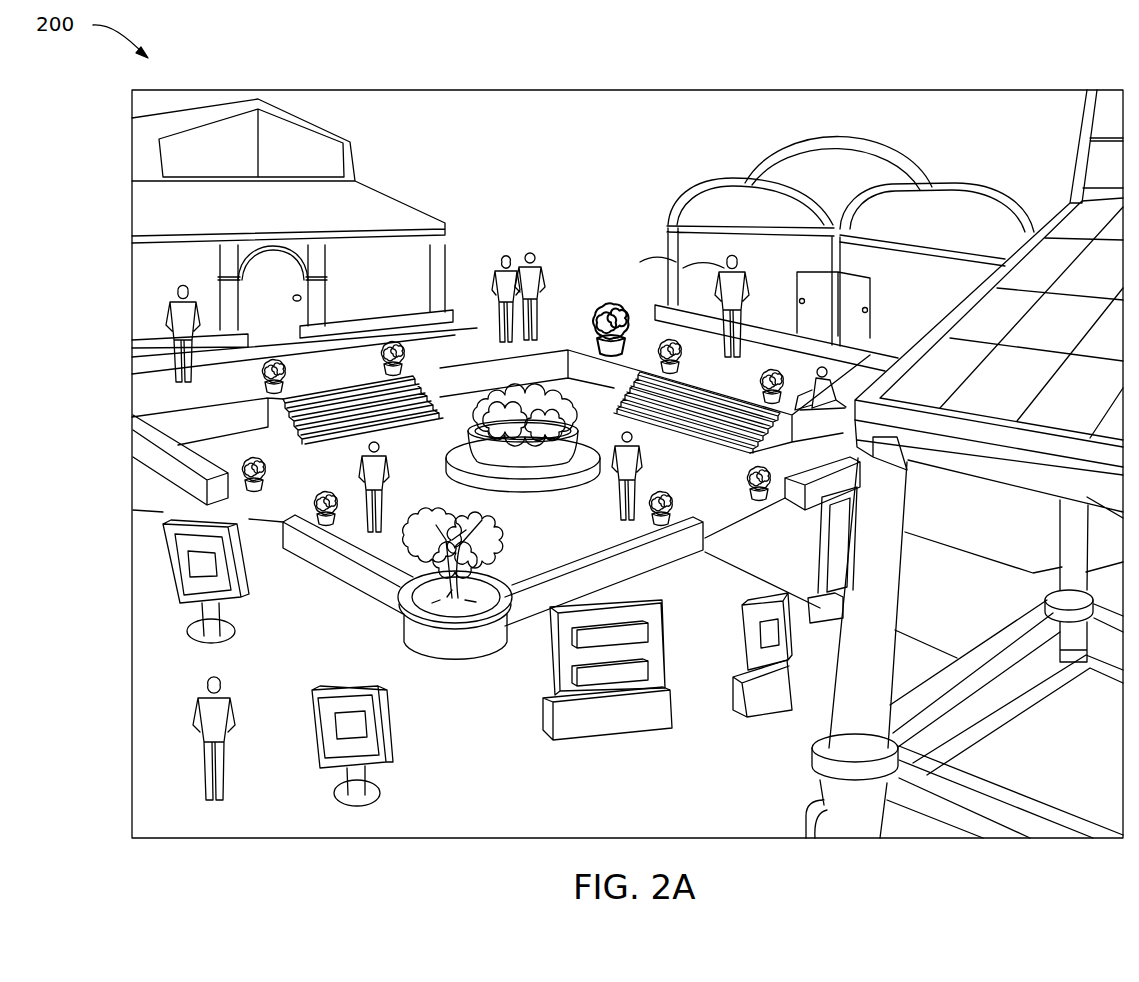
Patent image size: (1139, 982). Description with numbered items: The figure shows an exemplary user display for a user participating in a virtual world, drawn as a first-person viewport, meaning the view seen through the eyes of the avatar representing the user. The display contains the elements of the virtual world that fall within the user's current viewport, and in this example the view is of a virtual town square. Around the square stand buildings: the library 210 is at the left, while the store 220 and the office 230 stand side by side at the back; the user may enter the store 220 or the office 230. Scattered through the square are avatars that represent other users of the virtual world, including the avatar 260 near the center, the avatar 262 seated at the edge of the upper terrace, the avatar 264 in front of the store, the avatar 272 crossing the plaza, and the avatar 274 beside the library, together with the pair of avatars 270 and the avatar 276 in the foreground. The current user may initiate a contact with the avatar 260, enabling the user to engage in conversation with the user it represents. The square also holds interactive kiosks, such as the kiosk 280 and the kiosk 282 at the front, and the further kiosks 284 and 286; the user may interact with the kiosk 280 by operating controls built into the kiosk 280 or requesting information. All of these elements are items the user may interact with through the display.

The library 210 is at (323, 130).
The store 220 is at (793, 177).
The office 230 is at (962, 188).
The avatar 260 is at (643, 443).
The avatar 262 is at (848, 375).
The avatar 264 is at (718, 268).
The pair of avatars 270 is at (490, 266).
The avatar 272 is at (364, 460).
The avatar 274 is at (178, 291).
The avatar 276 is at (210, 684).
The kiosk 280 is at (252, 578).
The kiosk 282 is at (378, 797).
The display board 284 is at (612, 740).
The display kiosk 286 is at (772, 712).